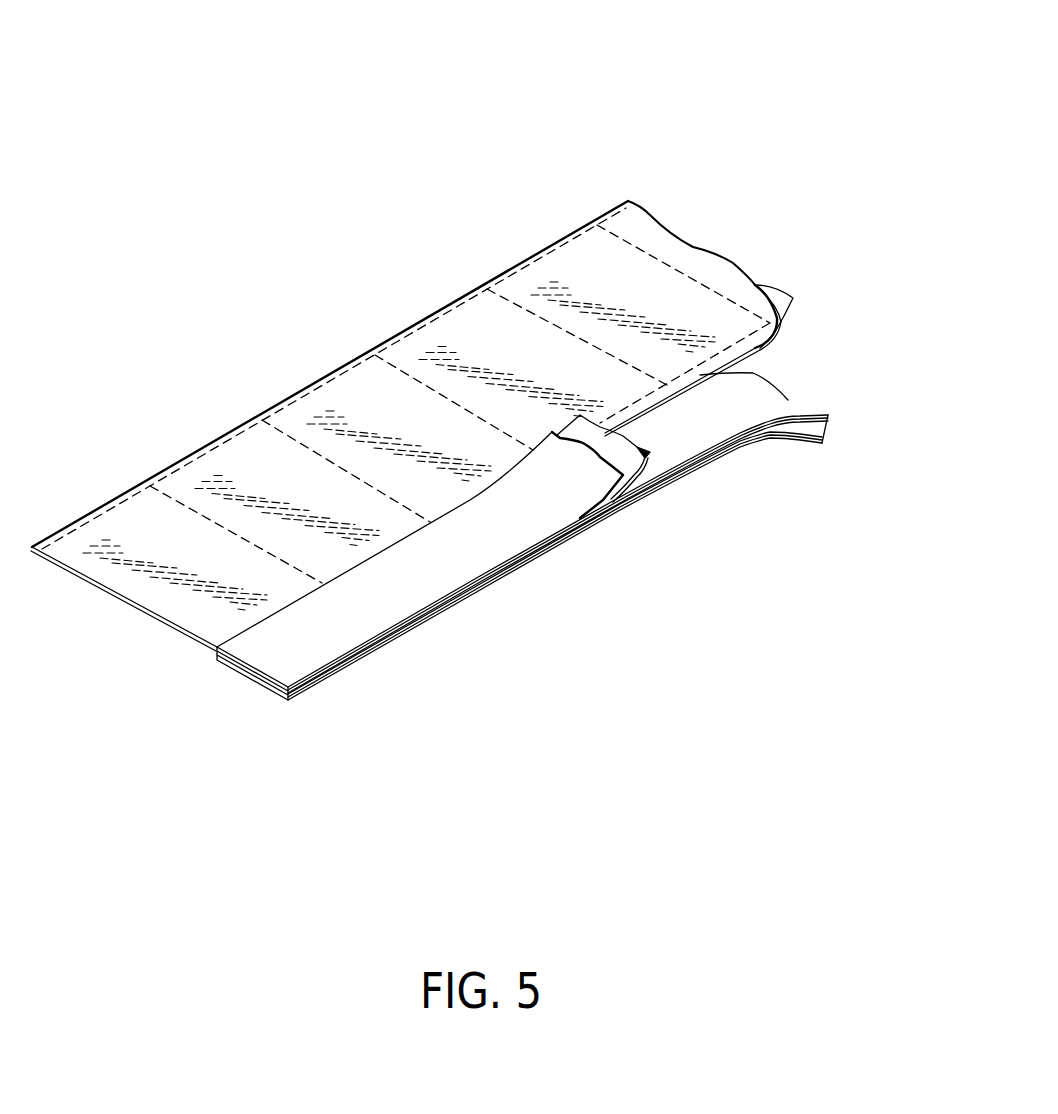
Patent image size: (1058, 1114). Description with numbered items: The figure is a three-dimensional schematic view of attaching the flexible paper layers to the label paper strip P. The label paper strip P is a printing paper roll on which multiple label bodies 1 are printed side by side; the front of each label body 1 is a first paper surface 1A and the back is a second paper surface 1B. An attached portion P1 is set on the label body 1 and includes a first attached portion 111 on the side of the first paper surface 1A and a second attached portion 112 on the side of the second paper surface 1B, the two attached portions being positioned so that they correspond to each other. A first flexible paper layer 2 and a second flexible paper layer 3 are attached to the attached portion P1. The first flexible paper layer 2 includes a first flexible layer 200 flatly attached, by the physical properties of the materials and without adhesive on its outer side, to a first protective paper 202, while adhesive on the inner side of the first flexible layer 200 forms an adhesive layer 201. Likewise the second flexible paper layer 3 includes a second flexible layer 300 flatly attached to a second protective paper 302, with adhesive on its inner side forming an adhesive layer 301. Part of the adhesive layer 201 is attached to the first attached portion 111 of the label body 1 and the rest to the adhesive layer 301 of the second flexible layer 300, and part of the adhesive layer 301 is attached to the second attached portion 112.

The label paper strip P is at (490, 335).
The attached portion P1 is at (777, 328).
The label body 1 is at (431, 335).
The first paper surface 1A is at (635, 287).
The second paper surface 1B is at (793, 290).
The first attached portion 111 is at (767, 345).
The second attached portion 112 is at (795, 298).
The first flexible paper layer 2 is at (544, 566).
The first flexible layer 200 is at (640, 470).
The adhesive layer 201 is at (646, 455).
The first protective paper 202 is at (623, 472).
The second flexible paper layer 3 is at (580, 536).
The second flexible layer 300 is at (776, 440).
The adhesive layer 301 is at (786, 397).
The second protective paper 302 is at (795, 432).